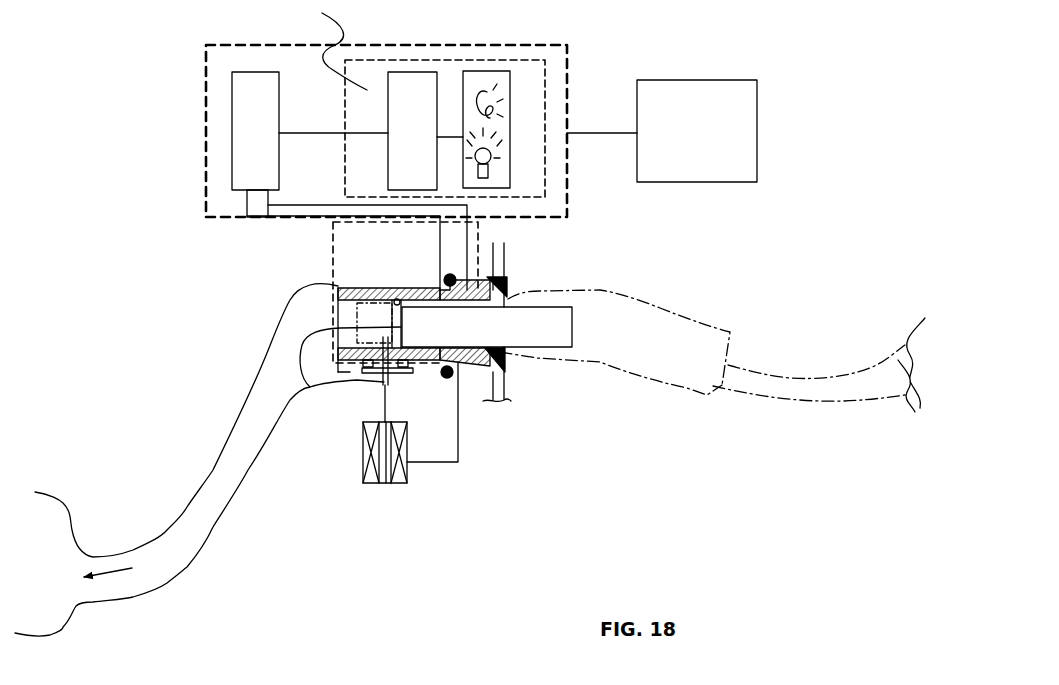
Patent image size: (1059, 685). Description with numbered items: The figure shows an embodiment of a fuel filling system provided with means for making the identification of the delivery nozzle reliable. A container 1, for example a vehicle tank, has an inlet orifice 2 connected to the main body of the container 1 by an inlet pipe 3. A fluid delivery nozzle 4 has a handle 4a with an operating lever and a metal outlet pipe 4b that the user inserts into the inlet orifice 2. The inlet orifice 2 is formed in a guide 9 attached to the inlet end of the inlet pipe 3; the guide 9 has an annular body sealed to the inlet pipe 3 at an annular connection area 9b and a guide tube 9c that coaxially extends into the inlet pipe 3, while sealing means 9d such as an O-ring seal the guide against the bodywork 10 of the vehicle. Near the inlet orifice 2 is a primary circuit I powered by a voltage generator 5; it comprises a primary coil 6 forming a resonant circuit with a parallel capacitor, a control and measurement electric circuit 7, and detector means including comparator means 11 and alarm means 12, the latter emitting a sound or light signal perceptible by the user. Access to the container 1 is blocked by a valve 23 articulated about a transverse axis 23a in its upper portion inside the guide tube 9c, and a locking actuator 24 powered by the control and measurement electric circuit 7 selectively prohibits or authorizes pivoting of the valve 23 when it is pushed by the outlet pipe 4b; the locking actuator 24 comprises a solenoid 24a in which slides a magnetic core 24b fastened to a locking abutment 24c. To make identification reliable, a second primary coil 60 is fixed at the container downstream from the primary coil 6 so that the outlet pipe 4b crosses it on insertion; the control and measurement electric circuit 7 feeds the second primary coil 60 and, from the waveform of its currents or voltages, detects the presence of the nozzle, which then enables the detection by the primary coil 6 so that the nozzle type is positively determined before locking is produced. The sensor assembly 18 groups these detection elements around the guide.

The container 1 is at (77, 616).
The inlet orifice 2 is at (526, 363).
The inlet pipe 3 is at (223, 461).
The fluid delivery nozzle 4 is at (694, 394).
The handle 4a is at (632, 353).
The outlet pipe 4b is at (310, 392).
The voltage generator 5 is at (749, 130).
The primary coil 6 is at (470, 373).
The control and measurement electric circuit 7 is at (262, 96).
The guide 9 is at (505, 293).
The annular connection area 9b is at (446, 378).
The guide tube 9c is at (357, 385).
The sealing means 9d is at (506, 283).
The bodywork 10 is at (502, 261).
The comparator means 11 is at (413, 88).
The alarm means 12 is at (500, 168).
The sensor unit 18 is at (353, 215).
The valve 23 is at (378, 300).
The transverse axis 23a is at (405, 300).
The locking actuator 24 is at (366, 494).
The solenoid 24a is at (398, 479).
The magnetic core 24b is at (378, 485).
The locking abutment 24c is at (381, 383).
The second primary coil 60 is at (462, 369).
The primary circuit I is at (207, 217).